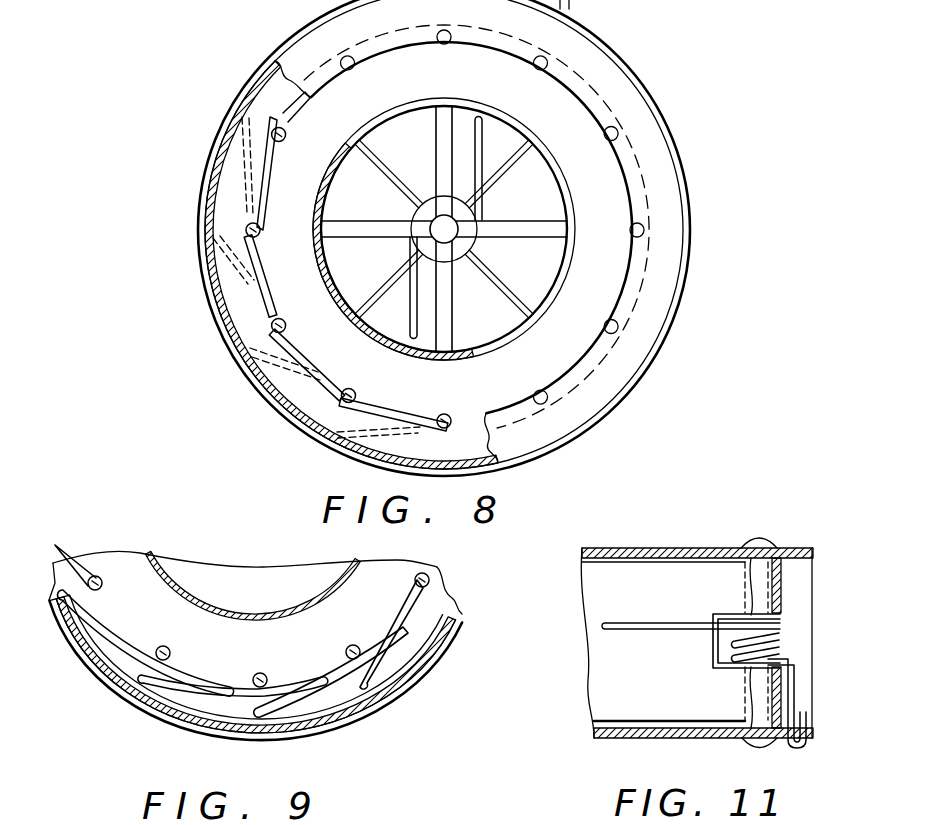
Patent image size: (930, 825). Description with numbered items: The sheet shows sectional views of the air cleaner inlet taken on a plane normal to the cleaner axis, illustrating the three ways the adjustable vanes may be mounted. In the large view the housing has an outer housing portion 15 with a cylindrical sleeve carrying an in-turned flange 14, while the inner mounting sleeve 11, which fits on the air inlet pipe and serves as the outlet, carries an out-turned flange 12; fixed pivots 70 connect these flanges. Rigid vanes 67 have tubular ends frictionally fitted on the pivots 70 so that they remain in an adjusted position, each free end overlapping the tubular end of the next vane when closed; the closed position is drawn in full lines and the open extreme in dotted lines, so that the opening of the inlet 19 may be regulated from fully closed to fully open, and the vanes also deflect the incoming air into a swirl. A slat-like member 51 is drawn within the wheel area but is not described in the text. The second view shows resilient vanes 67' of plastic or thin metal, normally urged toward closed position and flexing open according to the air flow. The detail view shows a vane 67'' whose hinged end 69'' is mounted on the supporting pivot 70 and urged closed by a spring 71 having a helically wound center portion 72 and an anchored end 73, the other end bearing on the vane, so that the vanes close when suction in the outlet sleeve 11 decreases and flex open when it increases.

In FIG. 8, the in-turned flange 14 is at (658, 172).
In FIG. 11, the in-turned flange 14 is at (665, 735).
In FIG. 8, the inlet opening 19 is at (611, 277).
In FIG. 8, the outer housing portion 15 is at (272, 401).
In FIG. 9, the outer housing portion 15 is at (337, 700).
In FIG. 8, the slat 51 is at (480, 172).
In FIG. 8, the vanes 67 is at (291, 265).
In FIG. 8, the fixed pivots 70 is at (246, 254).
In FIG. 9, the fixed pivots 70 is at (351, 647).
In FIG. 11, the fixed pivots 70 is at (760, 614).
In FIG. 9, the inner mounting sleeve 11 is at (287, 610).
In FIG. 9, the resilient vanes 67' is at (239, 666).
In FIG. 11, the out-turned flange 12 is at (704, 547).
In FIG. 11, the vanes 67'' is at (558, 643).
In FIG. 11, the hinged ends 69'' is at (820, 626).
In FIG. 11, the springs 71 is at (684, 625).
In FIG. 11, the helically wound center portion 72 is at (777, 640).
In FIG. 11, the anchored end 73 is at (794, 688).